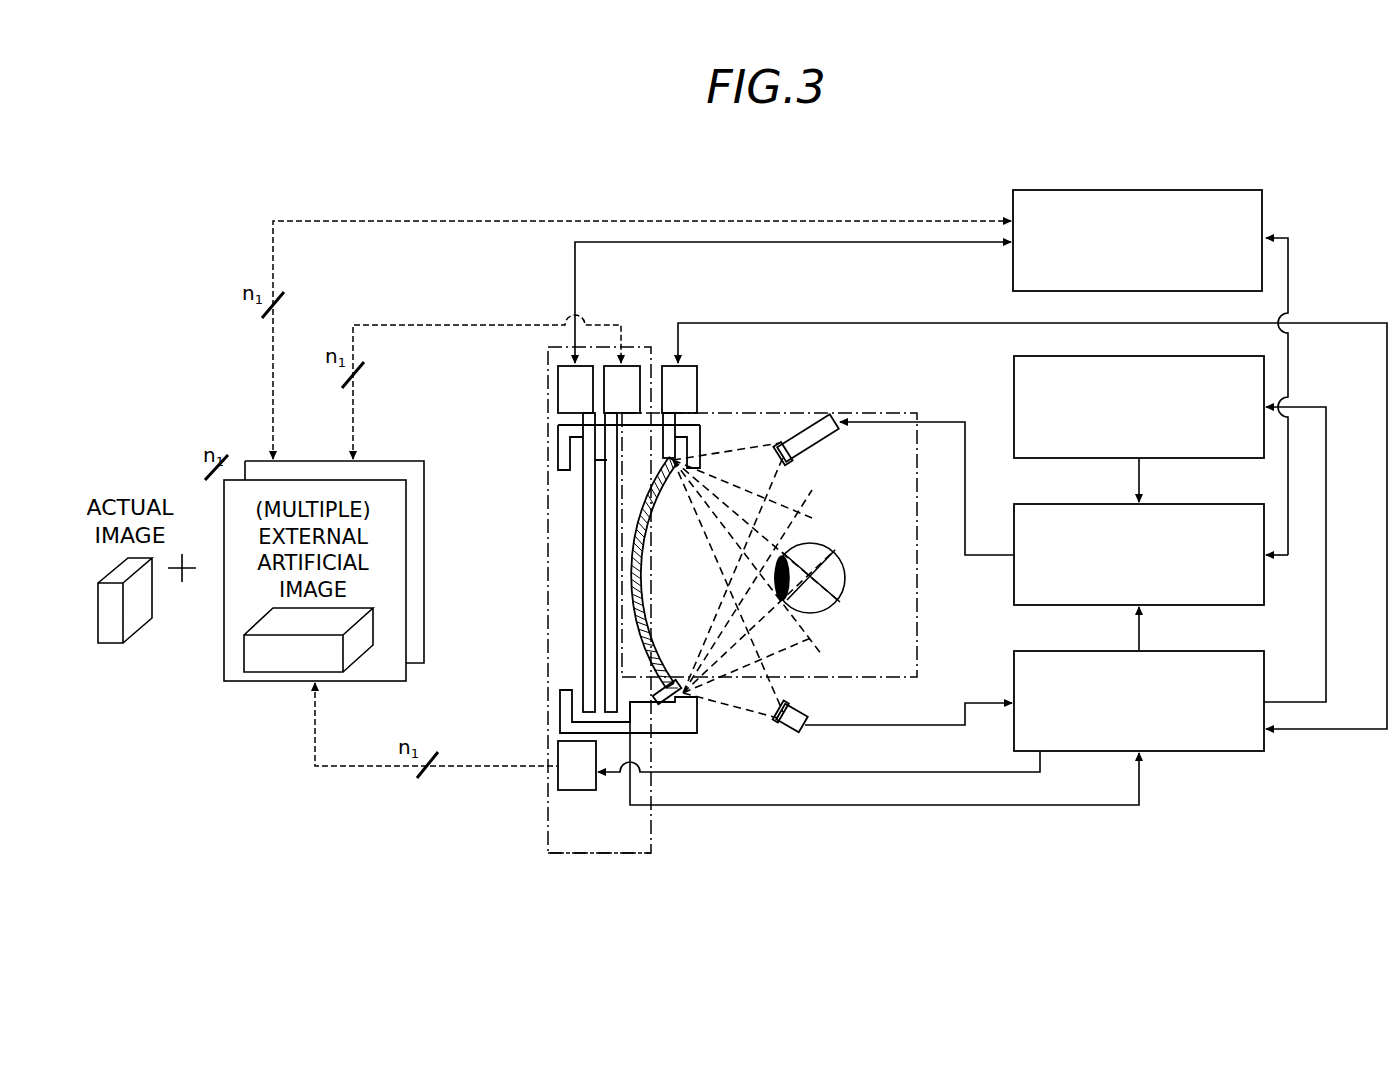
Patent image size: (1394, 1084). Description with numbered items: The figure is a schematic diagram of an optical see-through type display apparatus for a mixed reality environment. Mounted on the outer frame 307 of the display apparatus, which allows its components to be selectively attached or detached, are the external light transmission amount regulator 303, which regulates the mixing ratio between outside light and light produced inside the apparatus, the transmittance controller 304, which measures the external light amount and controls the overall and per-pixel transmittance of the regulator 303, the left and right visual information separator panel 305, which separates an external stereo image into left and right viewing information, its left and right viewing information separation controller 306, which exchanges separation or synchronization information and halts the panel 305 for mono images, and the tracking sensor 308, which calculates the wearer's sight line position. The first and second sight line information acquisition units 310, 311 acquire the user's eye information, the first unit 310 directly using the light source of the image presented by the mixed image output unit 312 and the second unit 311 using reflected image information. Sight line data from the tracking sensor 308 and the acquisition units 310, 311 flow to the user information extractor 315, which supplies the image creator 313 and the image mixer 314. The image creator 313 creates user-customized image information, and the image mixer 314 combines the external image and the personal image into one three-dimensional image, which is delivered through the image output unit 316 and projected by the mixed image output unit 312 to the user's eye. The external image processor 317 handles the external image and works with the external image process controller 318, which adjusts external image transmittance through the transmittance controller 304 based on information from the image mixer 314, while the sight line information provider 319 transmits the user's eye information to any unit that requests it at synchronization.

The external light transmission amount regulator 303 is at (548, 550).
The transmittance controller 304 is at (563, 365).
The left and right visual information separator panel 305 is at (604, 503).
The left and right viewing information separation controller 306 is at (625, 365).
The outer frame 307 is at (702, 438).
The tracking sensor 308 is at (690, 365).
The first sight line information acquisition unit 310 is at (673, 707).
The second sight line information acquisition unit 311 is at (786, 732).
The mixed image output unit 312 is at (803, 428).
The image creator 313 is at (1013, 380).
The image mixer 314 is at (1190, 503).
The user information extractor 315 is at (1190, 650).
The image output unit 316 is at (917, 627).
The external image processor 317 is at (600, 853).
The external image process controller 318 is at (1263, 203).
The sight line information provider 319 is at (559, 780).